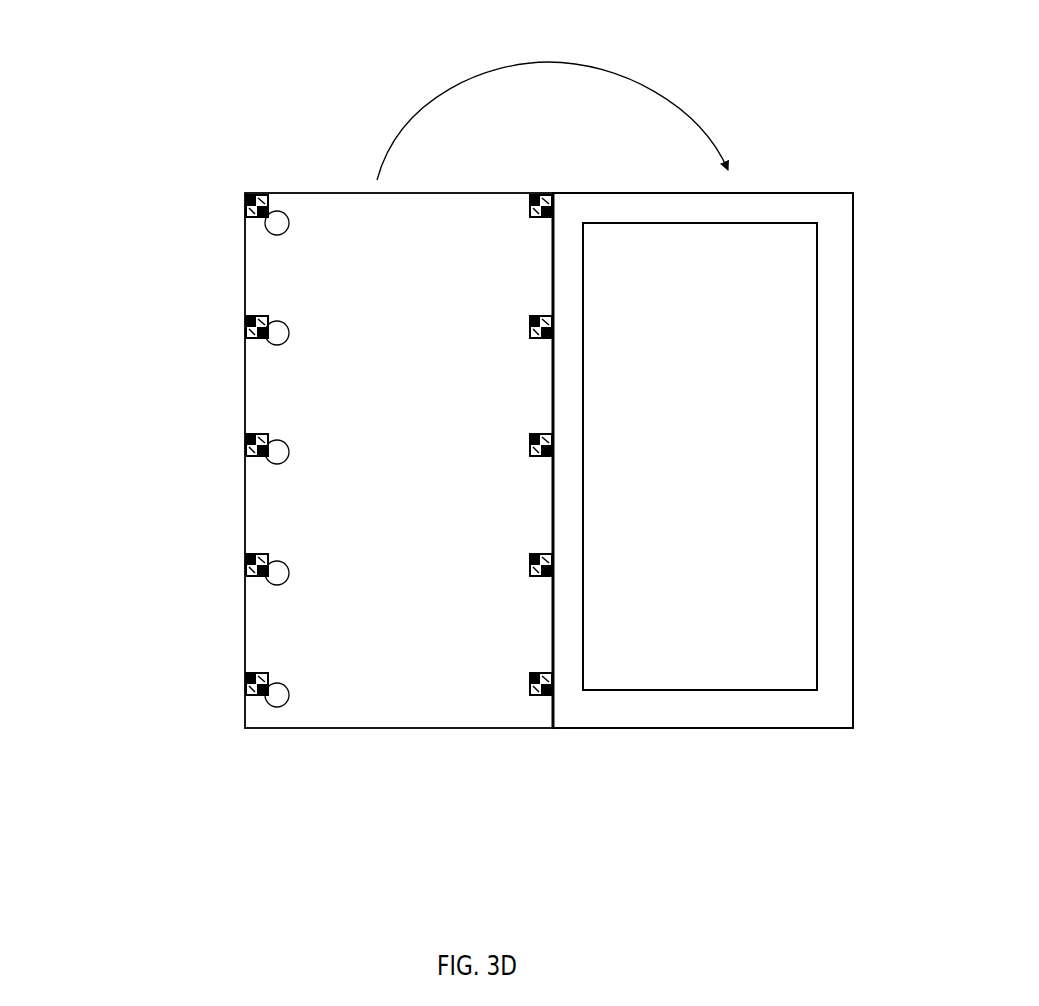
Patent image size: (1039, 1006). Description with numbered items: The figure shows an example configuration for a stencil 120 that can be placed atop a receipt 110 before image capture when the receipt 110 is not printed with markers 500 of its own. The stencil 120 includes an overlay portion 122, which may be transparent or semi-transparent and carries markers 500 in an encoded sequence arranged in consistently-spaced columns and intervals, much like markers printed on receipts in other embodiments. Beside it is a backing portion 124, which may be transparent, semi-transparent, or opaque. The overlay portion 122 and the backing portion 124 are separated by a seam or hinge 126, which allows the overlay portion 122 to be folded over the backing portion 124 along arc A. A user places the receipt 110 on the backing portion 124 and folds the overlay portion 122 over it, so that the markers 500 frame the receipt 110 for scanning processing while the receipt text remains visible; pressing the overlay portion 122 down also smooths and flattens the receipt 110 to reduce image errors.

The receipt 110 is at (787, 442).
The stencil 120 is at (853, 193).
The overlay portion 122 is at (320, 705).
The backing portion 124 is at (597, 705).
The seam or hinge 126 is at (553, 193).
The markers 500 is at (245, 681).
The arc A is at (560, 60).